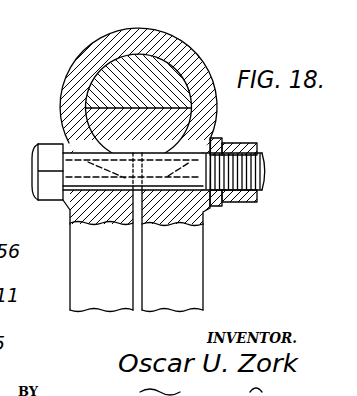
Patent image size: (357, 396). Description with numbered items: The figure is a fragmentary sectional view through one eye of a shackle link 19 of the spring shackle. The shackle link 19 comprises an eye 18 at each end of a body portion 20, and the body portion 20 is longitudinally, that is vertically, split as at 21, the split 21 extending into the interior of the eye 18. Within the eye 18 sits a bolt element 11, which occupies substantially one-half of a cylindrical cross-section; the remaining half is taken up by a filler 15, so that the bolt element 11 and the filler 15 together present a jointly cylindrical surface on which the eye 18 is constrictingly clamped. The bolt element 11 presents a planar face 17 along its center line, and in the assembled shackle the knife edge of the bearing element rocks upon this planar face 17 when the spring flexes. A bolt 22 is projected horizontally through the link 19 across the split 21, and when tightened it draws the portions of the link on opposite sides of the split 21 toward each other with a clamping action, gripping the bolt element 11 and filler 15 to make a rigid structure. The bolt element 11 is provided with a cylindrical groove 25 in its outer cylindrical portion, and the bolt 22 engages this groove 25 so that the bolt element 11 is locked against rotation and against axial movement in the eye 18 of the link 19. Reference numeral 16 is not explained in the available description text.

The bolt element 11 is at (176, 118).
The filler 15 is at (154, 65).
The bearing block 16 is at (100, 125).
The planar face 17 is at (105, 95).
The eye 18 is at (208, 70).
The shackle link 19 is at (82, 230).
The body portion 20 is at (122, 297).
The split 21 is at (134, 257).
The bolt 22 is at (266, 170).
The cylindrical groove 25 is at (133, 155).